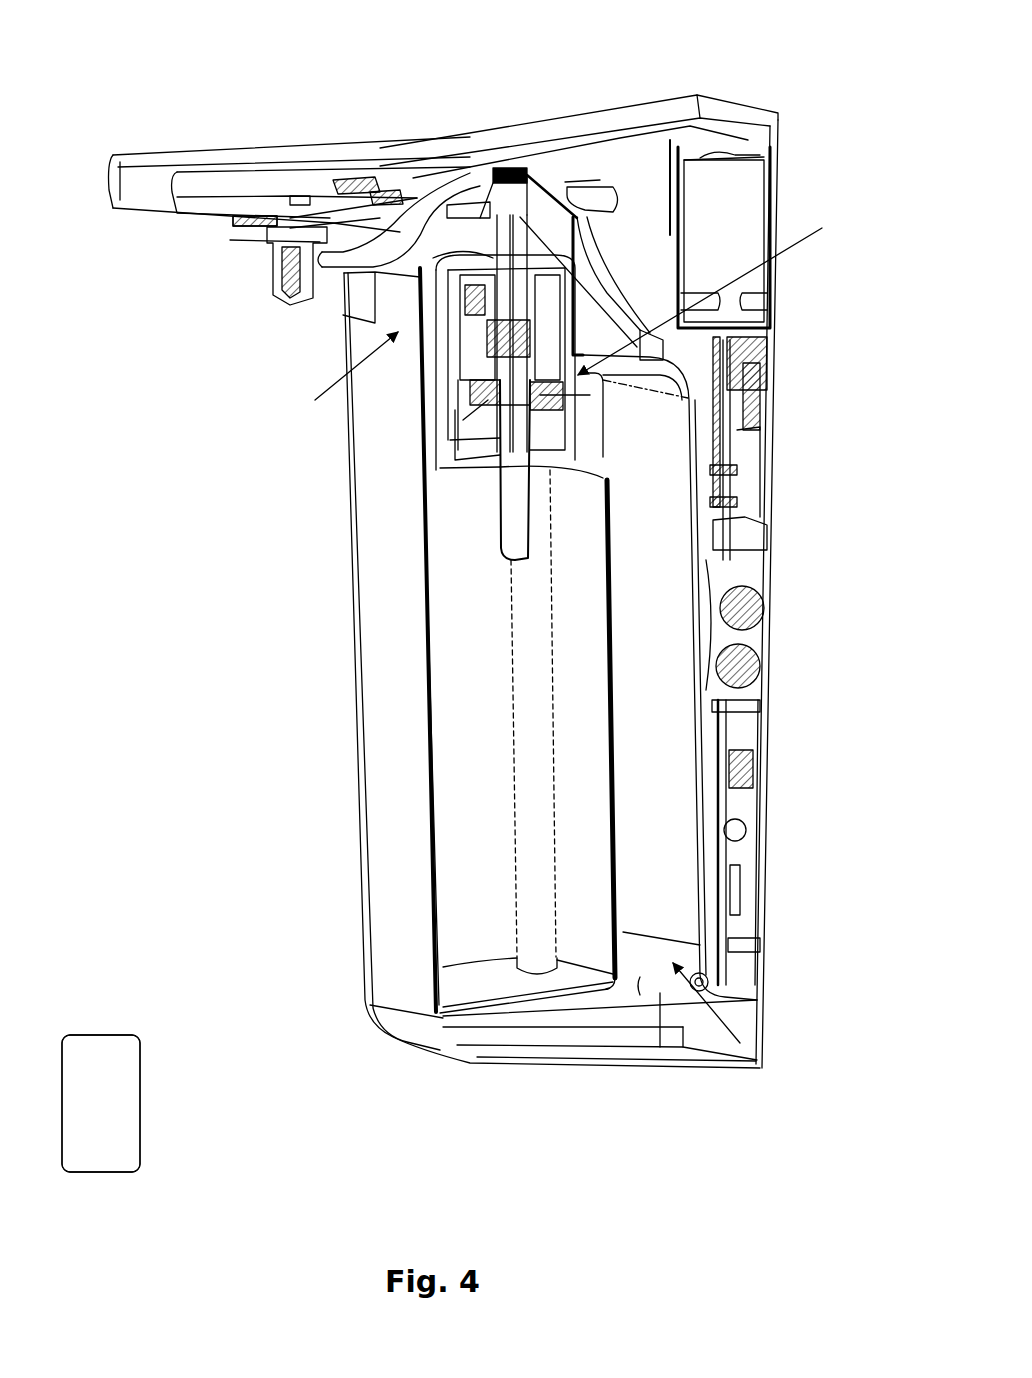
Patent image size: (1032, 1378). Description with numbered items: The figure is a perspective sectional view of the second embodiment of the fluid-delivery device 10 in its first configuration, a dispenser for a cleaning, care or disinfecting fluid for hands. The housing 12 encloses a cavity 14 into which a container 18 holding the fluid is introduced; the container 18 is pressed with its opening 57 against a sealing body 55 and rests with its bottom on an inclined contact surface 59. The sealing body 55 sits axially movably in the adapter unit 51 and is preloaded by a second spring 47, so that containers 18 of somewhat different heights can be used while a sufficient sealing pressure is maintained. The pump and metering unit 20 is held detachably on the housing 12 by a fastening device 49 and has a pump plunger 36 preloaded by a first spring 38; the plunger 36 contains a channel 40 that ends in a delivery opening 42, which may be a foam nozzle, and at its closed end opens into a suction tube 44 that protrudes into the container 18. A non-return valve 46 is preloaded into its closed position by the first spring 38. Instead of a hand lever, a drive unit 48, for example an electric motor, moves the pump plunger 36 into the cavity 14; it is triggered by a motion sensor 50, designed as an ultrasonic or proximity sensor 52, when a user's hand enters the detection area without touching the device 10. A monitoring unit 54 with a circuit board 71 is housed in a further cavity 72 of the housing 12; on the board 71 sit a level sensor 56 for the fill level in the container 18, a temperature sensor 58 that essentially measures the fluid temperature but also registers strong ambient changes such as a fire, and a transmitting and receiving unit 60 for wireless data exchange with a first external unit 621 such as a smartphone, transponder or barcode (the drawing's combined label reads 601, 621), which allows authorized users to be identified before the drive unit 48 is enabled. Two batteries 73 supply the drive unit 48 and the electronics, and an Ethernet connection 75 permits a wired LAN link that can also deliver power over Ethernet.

The device 10 is at (745, 95).
The housing 12 is at (775, 508).
The cavity 14 is at (740, 1043).
The container 18 is at (615, 612).
The pump and metering unit 20 is at (450, 672).
The pump plunger 36 is at (520, 170).
The first spring 38 is at (470, 355).
The channel 40 is at (425, 205).
The delivery opening 42 is at (298, 298).
The suction tube 44 is at (516, 545).
The non-return valve 46 is at (585, 408).
The second spring 47 is at (463, 420).
The drive unit 48 is at (712, 180).
The fastening device 49 is at (277, 225).
The motion sensor 50 is at (242, 228).
The adapter unit 51 is at (687, 277).
The ultrasonic sensor 52 is at (255, 221).
The monitoring unit 54 is at (780, 752).
The sealing body 55 is at (440, 468).
The level sensor 56 is at (750, 770).
The opening 57 is at (505, 395).
The temperature sensor 58 is at (735, 830).
The inclined contact surface 59 is at (638, 980).
The transmitting and receiving unit 60 is at (735, 893).
The circuit board 71 is at (720, 732).
The further cavity 72 is at (745, 973).
The batteries 73 is at (760, 665).
The Ethernet connection 75 is at (760, 945).
The smartphone 601 is at (140, 1122).
The first external unit 621 is at (101, 1103).